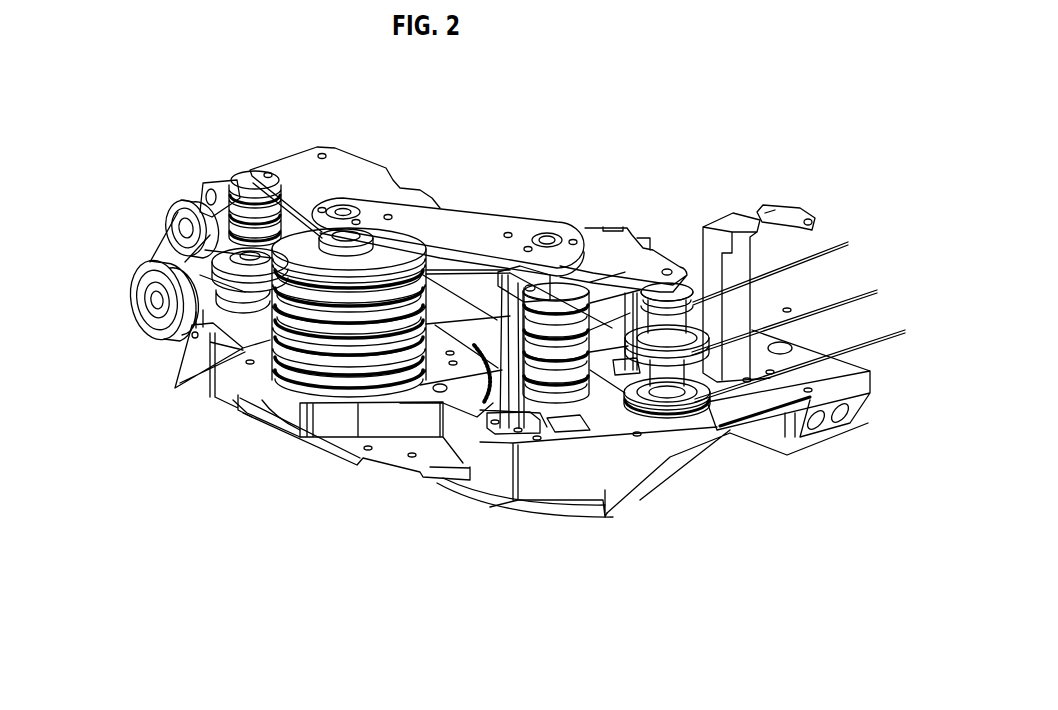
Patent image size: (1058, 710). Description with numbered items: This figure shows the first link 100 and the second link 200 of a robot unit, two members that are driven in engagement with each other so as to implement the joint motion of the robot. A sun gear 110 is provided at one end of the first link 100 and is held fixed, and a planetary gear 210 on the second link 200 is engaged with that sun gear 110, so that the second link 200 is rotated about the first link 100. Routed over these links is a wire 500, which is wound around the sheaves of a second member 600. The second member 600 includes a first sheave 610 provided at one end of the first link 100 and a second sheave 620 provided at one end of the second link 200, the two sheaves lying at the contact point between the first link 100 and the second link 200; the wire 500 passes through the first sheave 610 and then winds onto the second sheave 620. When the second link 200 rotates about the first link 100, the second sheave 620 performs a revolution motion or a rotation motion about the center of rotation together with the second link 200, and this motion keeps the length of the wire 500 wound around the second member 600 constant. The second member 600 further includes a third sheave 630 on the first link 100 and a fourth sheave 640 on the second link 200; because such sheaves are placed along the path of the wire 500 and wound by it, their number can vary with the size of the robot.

The first link 100 is at (613, 428).
The sun gear 110 is at (482, 420).
The second link 200 is at (206, 385).
The planetary gear 210 is at (476, 360).
The wire 500 is at (445, 360).
The second member 600 is at (435, 434).
The first sheave 610 is at (558, 403).
The second sheave 620 is at (300, 372).
The third sheave 630 is at (710, 403).
The fourth sheave 640 is at (150, 328).